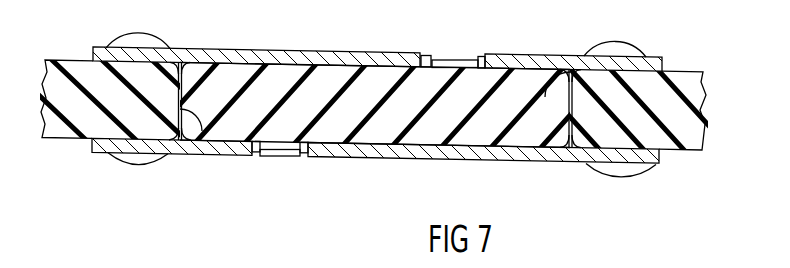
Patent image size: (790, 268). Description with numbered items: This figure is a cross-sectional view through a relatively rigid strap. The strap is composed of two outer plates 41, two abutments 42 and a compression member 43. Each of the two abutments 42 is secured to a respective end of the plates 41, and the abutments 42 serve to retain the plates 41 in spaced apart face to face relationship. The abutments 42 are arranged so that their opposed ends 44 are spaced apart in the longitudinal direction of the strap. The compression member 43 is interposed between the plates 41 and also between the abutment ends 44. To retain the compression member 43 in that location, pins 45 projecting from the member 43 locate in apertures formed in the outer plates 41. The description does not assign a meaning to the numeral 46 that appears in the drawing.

The outer plate 41 is at (323, 56).
The abutment 42 is at (72, 113).
The compression member 43 is at (376, 130).
The abutment end 44 is at (545, 62).
The pin 45 is at (455, 61).
The bump / stop 46 is at (425, 58).